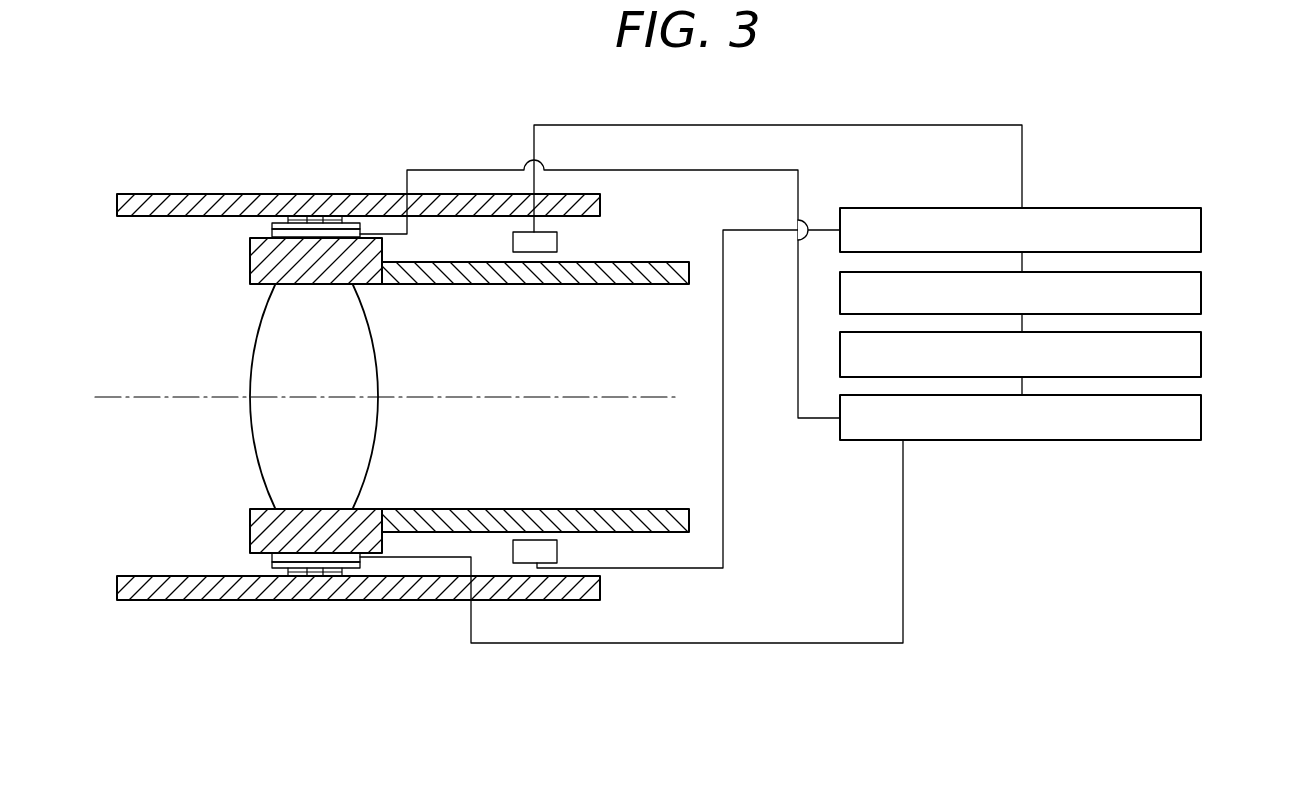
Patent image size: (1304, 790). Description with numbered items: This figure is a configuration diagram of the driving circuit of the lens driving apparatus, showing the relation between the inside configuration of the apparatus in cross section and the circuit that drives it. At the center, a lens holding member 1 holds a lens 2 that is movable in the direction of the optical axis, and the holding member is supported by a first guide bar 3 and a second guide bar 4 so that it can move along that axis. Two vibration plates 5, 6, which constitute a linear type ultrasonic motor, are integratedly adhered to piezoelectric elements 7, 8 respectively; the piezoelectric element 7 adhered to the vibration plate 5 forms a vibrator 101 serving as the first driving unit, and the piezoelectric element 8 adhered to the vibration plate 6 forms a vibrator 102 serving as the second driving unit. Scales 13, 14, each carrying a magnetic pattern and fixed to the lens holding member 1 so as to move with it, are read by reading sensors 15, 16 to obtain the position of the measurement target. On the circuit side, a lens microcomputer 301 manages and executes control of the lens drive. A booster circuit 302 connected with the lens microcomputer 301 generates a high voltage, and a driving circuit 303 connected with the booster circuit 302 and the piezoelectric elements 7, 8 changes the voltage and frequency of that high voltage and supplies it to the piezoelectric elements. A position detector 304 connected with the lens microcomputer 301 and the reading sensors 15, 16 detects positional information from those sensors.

The lens holding member 1 is at (250, 253).
The lens 2 is at (254, 346).
The first guide bar 3 is at (168, 194).
The second guide bar 4 is at (165, 600).
The vibration plate 5 is at (297, 228).
The vibration plate 6 is at (297, 562).
The piezoelectric element 7 is at (335, 233).
The piezoelectric element 8 is at (335, 557).
The scale 13 is at (645, 285).
The scale 14 is at (645, 508).
The reading sensor 15 is at (557, 240).
The reading sensor 16 is at (557, 552).
The vibrator 101 is at (316, 158).
The vibrator 102 is at (316, 629).
The lens microcomputer 301 is at (1201, 293).
The booster circuit 302 is at (1201, 349).
The driving circuit 303 is at (1201, 410).
The position detector 304 is at (1201, 225).